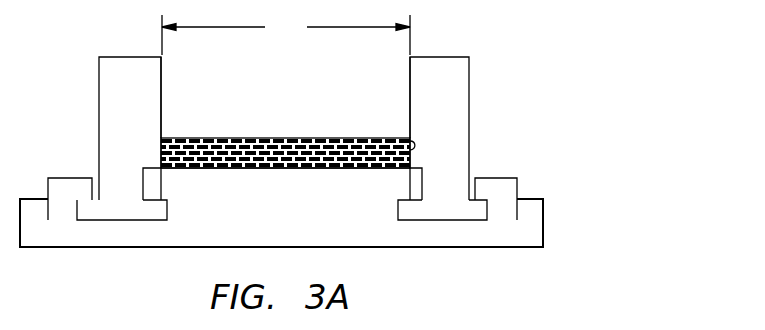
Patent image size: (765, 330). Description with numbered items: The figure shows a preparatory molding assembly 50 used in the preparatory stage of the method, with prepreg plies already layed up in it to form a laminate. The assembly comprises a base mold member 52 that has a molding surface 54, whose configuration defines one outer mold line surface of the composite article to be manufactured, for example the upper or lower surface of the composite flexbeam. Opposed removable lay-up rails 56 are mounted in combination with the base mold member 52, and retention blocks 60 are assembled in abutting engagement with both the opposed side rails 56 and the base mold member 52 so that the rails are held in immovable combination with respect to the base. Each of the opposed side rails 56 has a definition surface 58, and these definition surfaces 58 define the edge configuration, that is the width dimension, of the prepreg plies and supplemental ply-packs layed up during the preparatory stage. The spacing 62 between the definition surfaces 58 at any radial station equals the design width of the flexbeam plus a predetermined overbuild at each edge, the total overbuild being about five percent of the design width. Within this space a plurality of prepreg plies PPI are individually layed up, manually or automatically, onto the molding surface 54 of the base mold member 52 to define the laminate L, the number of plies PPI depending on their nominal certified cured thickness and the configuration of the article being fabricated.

The preparatory molding assembly 50 is at (616, 212).
The base mold member 52 is at (413, 249).
The molding surface 54 is at (250, 168).
The removable lay-up rails 56 is at (113, 105).
The definition surfaces 58 is at (162, 82).
The retention blocks 60 is at (55, 191).
The spacing 62 is at (286, 35).
The laminate L is at (416, 147).
The prepreg plies PPI is at (403, 163).